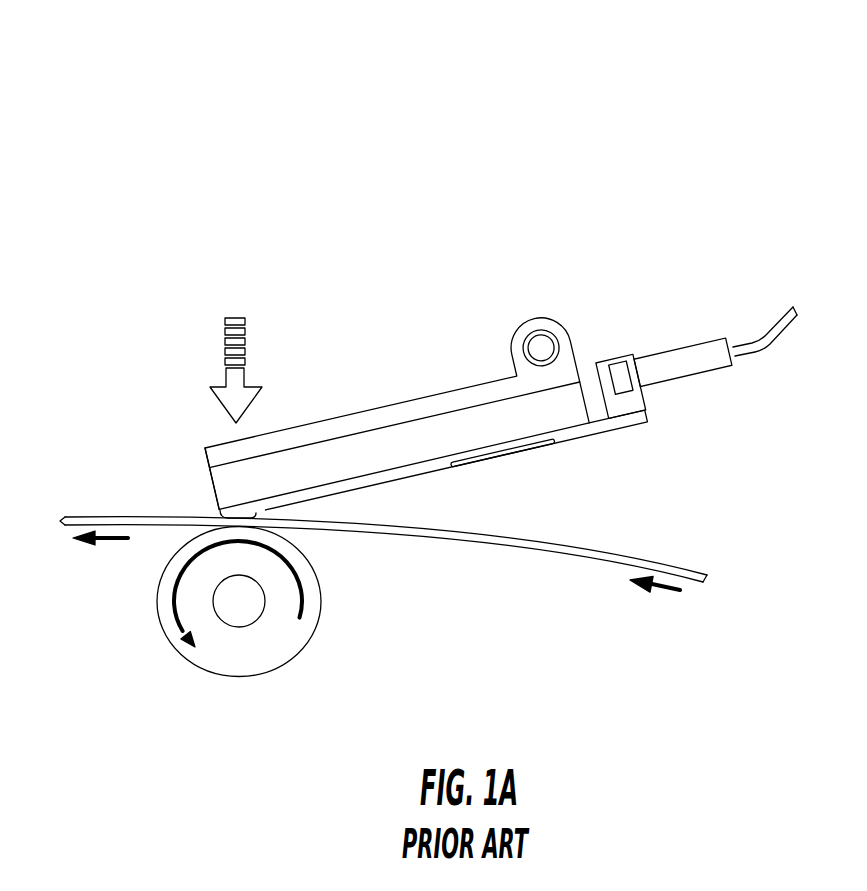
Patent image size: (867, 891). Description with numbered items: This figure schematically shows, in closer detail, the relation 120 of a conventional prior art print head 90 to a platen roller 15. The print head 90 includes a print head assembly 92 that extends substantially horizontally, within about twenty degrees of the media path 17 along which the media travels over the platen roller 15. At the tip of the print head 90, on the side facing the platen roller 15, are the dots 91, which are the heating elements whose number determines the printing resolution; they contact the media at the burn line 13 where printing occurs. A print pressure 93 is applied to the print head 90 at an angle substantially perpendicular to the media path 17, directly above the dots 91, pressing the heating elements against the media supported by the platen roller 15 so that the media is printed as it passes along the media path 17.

The relation of the prior art print head to the platen roller 120 is at (690, 66).
The print head 90 is at (423, 353).
The print head assembly 92 is at (582, 348).
The print pressure 93 is at (220, 308).
The burn line 13 is at (208, 497).
The dots 91 is at (210, 513).
The platen roller 15 is at (157, 635).
The media path 17 is at (512, 545).